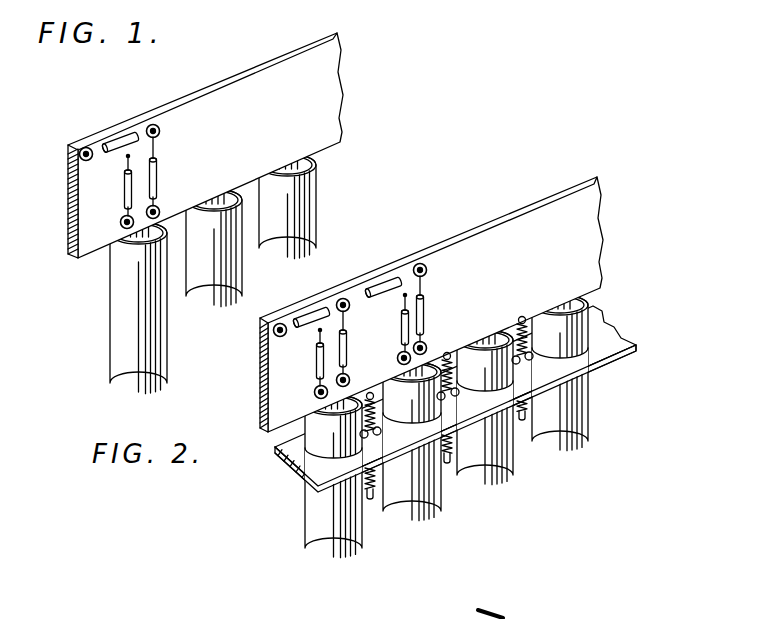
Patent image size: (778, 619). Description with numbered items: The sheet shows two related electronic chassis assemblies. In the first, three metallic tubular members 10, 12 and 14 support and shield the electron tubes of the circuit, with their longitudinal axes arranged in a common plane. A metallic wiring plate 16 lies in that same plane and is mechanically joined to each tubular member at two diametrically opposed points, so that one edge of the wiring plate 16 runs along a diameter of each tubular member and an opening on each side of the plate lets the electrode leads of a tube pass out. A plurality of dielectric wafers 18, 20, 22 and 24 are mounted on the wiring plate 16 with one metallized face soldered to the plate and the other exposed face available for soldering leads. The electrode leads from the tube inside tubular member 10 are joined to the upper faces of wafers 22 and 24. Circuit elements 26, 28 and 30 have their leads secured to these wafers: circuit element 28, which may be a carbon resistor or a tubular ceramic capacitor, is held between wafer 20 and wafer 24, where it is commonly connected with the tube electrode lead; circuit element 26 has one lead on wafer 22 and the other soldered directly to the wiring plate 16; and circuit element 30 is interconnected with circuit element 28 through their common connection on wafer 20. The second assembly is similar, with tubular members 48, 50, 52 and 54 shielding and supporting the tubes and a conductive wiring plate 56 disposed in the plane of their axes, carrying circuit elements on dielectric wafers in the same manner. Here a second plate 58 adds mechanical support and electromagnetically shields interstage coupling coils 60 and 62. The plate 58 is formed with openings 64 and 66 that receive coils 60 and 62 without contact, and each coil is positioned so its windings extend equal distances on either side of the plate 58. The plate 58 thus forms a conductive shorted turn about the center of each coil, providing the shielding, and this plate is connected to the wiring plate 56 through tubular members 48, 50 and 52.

In FIG. 1, the tubular member 10 is at (110, 318).
In FIG. 1, the tubular member 12 is at (204, 309).
In FIG. 1, the tubular member 14 is at (318, 216).
In FIG. 1, the wiring plate 16 is at (340, 113).
In FIG. 1, the dielectric wafer 18 is at (87, 147).
In FIG. 1, the dielectric wafer 20 is at (153, 123).
In FIG. 1, the dielectric wafer 22 is at (121, 221).
In FIG. 1, the dielectric wafer 24 is at (159, 211).
In FIG. 1, the circuit element 26 is at (124, 190).
In FIG. 1, the circuit element 28 is at (158, 170).
In FIG. 1, the circuit element 30 is at (122, 137).
In FIG. 2, the tubular member 48 is at (348, 562).
In FIG. 2, the tubular member 50 is at (408, 523).
In FIG. 2, the tubular member 52 is at (483, 485).
In FIG. 2, the tubular member 54 is at (553, 455).
In FIG. 2, the wiring plate 56 is at (600, 252).
In FIG. 2, the second plate 58 is at (627, 347).
In FIG. 2, the interstage coupling coil 60 is at (369, 393).
In FIG. 2, the interstage coupling coil 62 is at (446, 353).
In FIG. 2, the opening 64 is at (381, 430).
In FIG. 2, the opening 66 is at (458, 395).